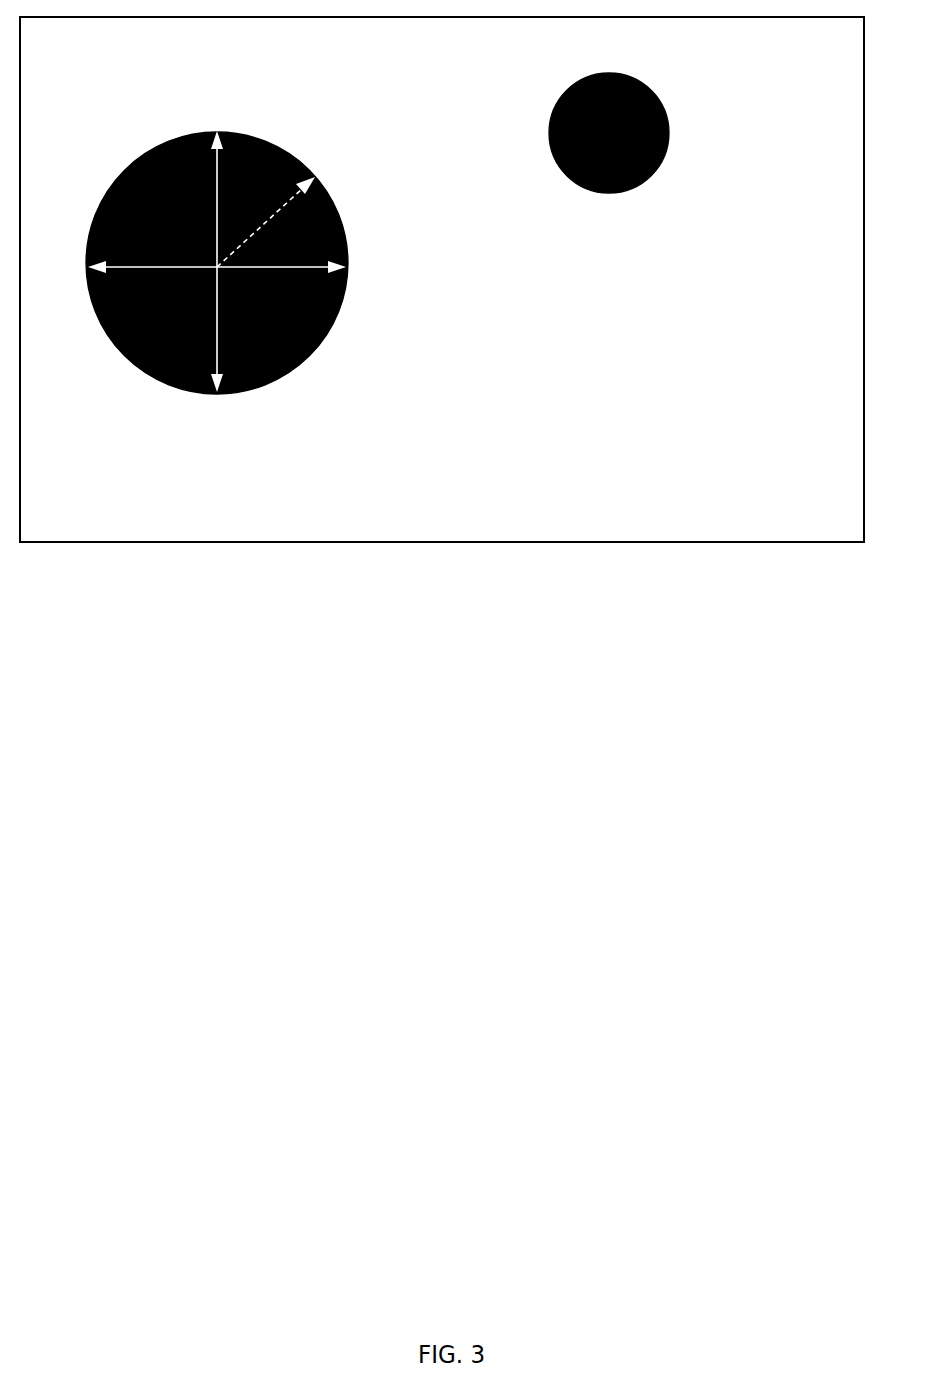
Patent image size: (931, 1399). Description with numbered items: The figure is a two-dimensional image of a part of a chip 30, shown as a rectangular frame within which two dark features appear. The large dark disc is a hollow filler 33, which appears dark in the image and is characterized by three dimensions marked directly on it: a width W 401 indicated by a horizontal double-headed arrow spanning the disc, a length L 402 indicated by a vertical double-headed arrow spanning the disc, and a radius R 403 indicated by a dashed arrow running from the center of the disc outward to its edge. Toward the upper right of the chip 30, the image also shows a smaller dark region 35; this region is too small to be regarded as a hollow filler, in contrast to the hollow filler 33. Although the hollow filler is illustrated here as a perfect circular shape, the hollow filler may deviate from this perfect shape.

The chip 30 is at (709, 502).
The hollow filler 33 is at (185, 233).
The dark region 35 is at (622, 145).
The width W 401 is at (258, 268).
The length L 402 is at (207, 277).
The radius R 403 is at (297, 208).